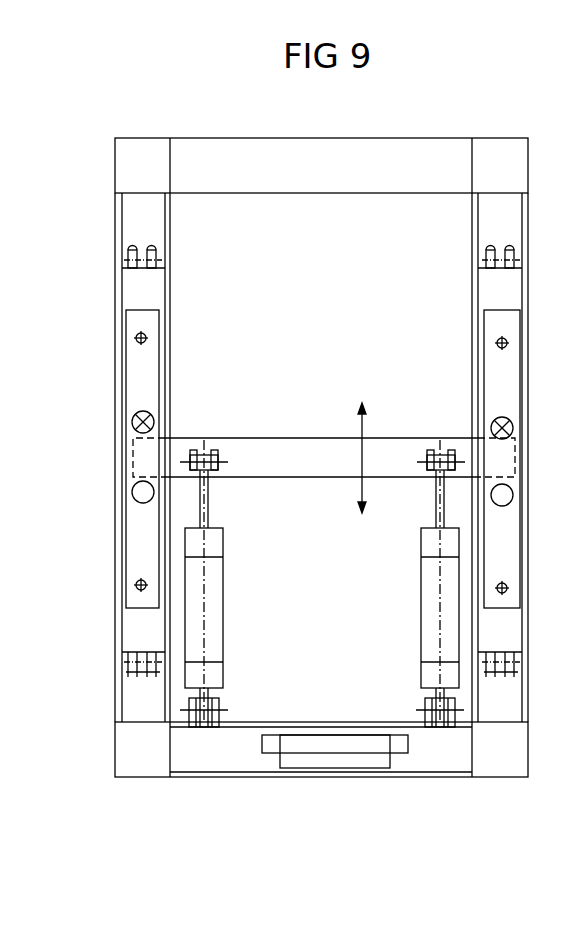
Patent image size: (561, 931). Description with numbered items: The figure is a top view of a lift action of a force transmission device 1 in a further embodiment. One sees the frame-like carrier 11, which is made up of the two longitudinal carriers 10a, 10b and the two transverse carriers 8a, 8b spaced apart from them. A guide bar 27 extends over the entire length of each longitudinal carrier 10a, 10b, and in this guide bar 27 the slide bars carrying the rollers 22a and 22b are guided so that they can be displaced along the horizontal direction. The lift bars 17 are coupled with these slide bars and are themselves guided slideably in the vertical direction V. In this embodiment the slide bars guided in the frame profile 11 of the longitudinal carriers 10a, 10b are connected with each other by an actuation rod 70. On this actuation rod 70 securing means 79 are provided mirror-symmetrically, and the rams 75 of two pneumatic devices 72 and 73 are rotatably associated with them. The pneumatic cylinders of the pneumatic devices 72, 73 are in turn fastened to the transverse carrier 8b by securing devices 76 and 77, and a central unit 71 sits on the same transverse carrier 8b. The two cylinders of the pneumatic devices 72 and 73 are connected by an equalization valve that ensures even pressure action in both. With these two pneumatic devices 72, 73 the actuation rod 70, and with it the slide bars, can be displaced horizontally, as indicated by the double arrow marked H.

The force transmission device 1 is at (293, 442).
The transverse carrier 8a is at (135, 175).
The transverse carrier 8b is at (125, 763).
The longitudinal carrier 10a is at (530, 127).
The longitudinal carrier 10b is at (172, 127).
The frame-like carrier 11 is at (560, 293).
The lift bar 17 is at (560, 360).
The roller 22a is at (560, 670).
The roller 22b is at (560, 225).
The guide bar 27 is at (0, 587).
The actuation rod 70 is at (278, 447).
The drive unit 71 is at (318, 757).
The pneumatic device 72 is at (430, 637).
The pneumatic device 73 is at (0, 638).
The ram 75 is at (560, 557).
The securing device 76 is at (448, 713).
The securing device 77 is at (195, 708).
The securing means 79 is at (560, 457).
The vertical direction V is at (560, 457).
The horizontal direction H is at (351, 458).